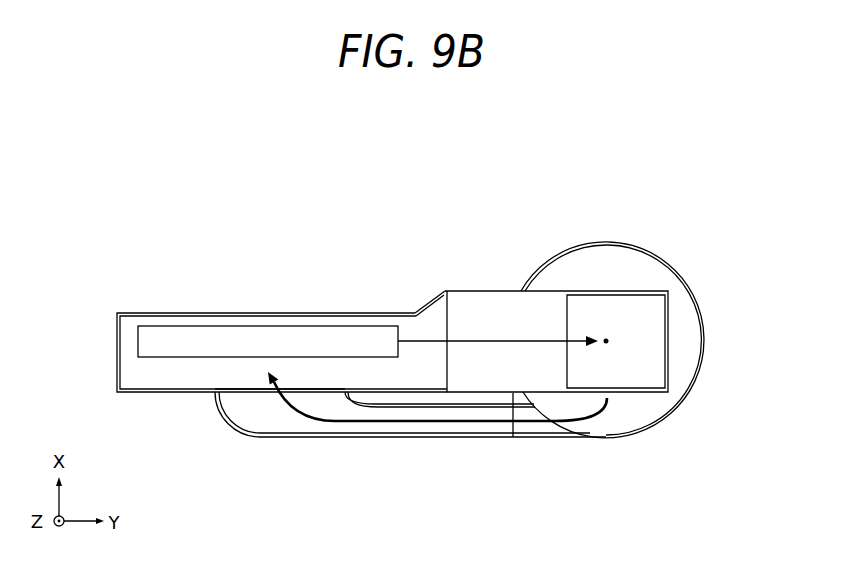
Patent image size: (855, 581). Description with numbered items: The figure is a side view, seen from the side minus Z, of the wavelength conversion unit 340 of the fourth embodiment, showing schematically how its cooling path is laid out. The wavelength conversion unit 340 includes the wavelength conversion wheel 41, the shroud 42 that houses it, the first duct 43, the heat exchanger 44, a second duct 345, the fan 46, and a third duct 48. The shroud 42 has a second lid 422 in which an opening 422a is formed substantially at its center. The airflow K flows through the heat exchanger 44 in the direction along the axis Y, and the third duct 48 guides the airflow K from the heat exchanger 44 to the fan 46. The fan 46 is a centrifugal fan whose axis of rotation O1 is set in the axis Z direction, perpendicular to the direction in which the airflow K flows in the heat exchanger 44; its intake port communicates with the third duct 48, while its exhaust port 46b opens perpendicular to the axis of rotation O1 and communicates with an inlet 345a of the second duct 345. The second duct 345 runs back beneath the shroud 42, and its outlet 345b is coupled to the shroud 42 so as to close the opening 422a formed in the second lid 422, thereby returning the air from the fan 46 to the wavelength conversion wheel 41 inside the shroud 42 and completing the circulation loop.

The wavelength conversion unit 340 is at (692, 214).
The wavelength conversion wheel 41 is at (283, 316).
The shroud 42 is at (378, 303).
The first duct 43 is at (425, 300).
The heat exchanger 44 is at (465, 307).
The fan 46 is at (686, 408).
The exhaust port 46b is at (513, 428).
The third duct 48 is at (670, 360).
The second lid 422 is at (166, 396).
The opening 422a is at (227, 388).
The second duct 345 is at (383, 438).
The inlet 345a is at (532, 424).
The outlet 345b is at (331, 424).
The airflow K is at (507, 356).
The axis of rotation O1 is at (608, 341).